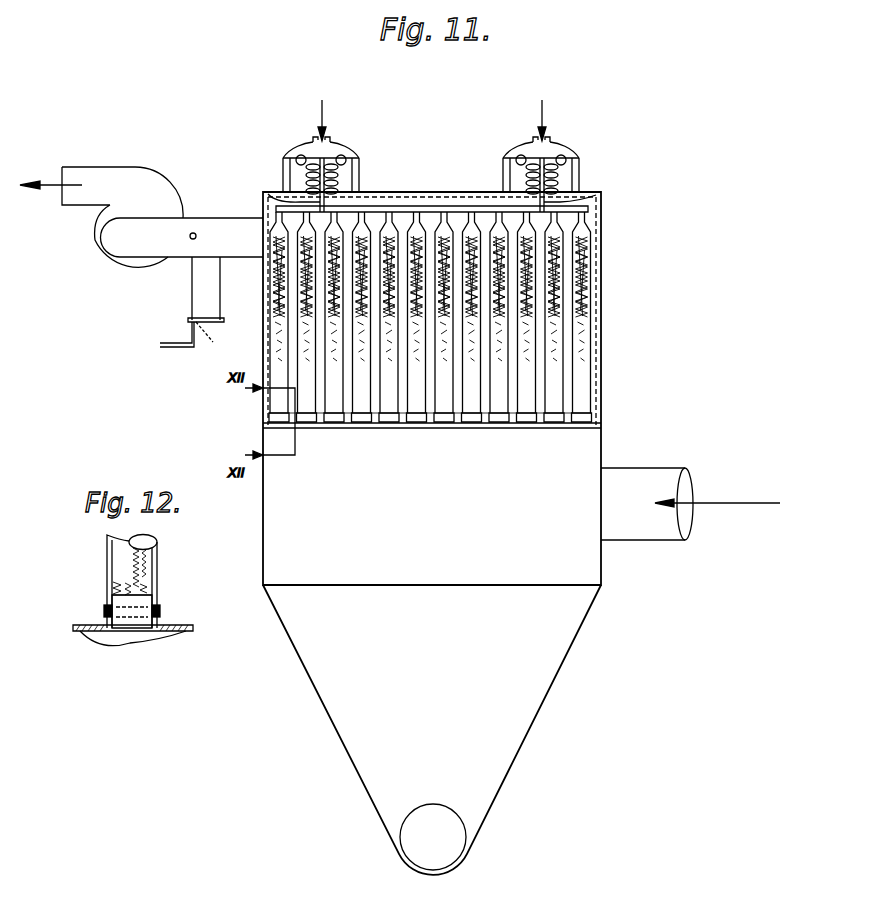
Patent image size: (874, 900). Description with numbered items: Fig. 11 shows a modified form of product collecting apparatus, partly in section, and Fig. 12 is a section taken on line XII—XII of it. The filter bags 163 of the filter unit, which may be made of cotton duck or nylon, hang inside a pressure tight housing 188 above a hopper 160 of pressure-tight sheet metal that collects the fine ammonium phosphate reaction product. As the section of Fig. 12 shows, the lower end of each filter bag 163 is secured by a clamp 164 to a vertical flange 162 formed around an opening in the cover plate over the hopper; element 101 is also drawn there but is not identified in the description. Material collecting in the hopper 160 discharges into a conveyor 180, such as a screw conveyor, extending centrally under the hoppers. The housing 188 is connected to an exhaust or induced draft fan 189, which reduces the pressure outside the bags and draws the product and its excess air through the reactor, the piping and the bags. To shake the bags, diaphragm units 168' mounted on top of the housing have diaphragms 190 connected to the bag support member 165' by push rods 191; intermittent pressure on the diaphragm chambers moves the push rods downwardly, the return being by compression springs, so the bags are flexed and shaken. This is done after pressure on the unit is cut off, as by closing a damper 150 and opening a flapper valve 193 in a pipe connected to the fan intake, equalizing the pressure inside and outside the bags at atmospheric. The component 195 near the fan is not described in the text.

In FIG. 12, the plate 101 is at (84, 623).
In FIG. 11, the damper 150 is at (645, 457).
In FIG. 11, the hopper 160 is at (452, 516).
In FIG. 12, the vertical flange 162 is at (143, 597).
In FIG. 11, the filter bag 163 is at (598, 262).
In FIG. 12, the filter bag 163 is at (157, 562).
In FIG. 11, the clamp 164 is at (600, 414).
In FIG. 12, the clamp 164 is at (160, 612).
In FIG. 11, the bag support member 165' is at (432, 187).
In FIG. 11, the diaphragm unit 168' is at (457, 130).
In FIG. 11, the conveyor 180 is at (448, 855).
In FIG. 11, the pressure tight housing 188 is at (603, 292).
In FIG. 11, the exhaust or induced draft fan 189 is at (162, 183).
In FIG. 11, the diaphragm 190 is at (596, 160).
In FIG. 11, the push rod 191 is at (600, 181).
In FIG. 11, the flapper valve 193 is at (210, 330).
In FIG. 11, the outlet pipe 195 is at (186, 254).